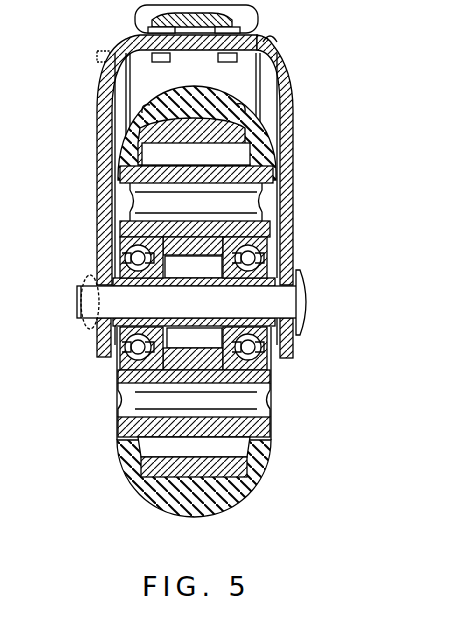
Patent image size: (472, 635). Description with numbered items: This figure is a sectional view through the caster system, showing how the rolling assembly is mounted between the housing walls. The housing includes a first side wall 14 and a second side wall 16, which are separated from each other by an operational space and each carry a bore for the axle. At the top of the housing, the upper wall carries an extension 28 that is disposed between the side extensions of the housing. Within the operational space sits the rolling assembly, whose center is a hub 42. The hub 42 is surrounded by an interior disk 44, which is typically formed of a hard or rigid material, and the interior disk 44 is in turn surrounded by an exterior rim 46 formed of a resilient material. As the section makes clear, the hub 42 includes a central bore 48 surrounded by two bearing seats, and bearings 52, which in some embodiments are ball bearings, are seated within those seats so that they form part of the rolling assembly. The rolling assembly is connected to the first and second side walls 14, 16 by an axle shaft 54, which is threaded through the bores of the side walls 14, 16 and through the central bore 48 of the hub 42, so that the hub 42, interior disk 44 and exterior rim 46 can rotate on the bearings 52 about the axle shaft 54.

The first side wall 14 is at (97, 129).
The second side wall 16 is at (292, 113).
The extension 28 is at (123, 35).
The hub 42 is at (230, 236).
The interior disk 44 is at (190, 125).
The exterior rim 46 is at (245, 124).
The central bore 48 is at (107, 337).
The bearings 52 is at (262, 358).
The axle shaft 54 is at (262, 303).